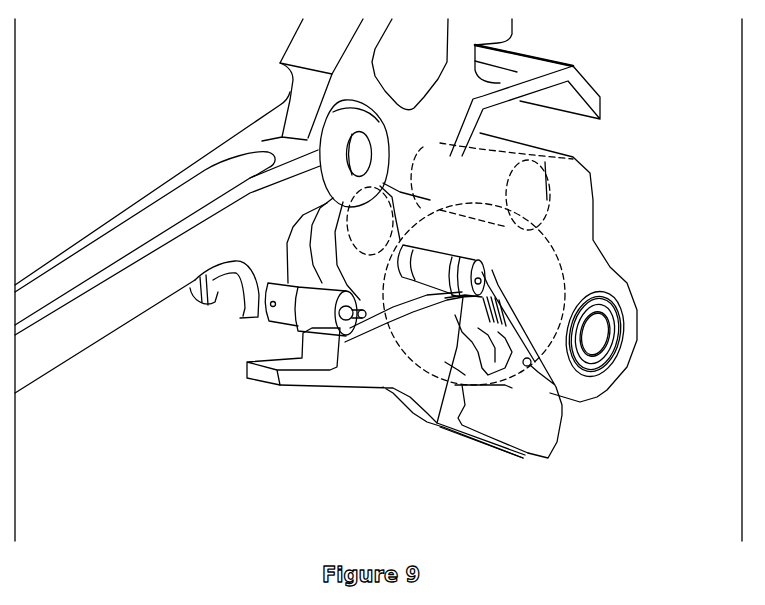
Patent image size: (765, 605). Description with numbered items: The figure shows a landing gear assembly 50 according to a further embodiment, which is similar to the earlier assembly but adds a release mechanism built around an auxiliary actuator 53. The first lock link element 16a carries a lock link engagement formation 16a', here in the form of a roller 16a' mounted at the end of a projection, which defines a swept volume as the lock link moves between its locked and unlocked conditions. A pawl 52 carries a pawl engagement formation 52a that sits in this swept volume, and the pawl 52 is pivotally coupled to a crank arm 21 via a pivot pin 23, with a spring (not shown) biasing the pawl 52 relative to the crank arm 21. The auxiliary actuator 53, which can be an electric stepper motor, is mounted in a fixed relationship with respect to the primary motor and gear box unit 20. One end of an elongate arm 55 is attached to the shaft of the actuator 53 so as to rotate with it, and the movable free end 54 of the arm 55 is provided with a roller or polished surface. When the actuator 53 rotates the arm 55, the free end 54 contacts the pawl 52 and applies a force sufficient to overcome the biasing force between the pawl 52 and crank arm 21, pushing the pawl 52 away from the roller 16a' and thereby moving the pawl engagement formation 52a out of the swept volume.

The first lock link element 16a is at (231, 206).
The lock link engagement formation 16a' is at (243, 329).
The landing gear assembly 50 is at (650, 131).
The pawl 52 is at (362, 372).
The pawl engagement formation 52a is at (318, 347).
The auxiliary actuator 53 is at (483, 183).
The free end 54 is at (432, 282).
The elongate arm 55 is at (483, 267).
The primary motor and gear box unit 20 is at (620, 355).
The crank arm 21 is at (492, 345).
The pivot pin 23 is at (532, 366).